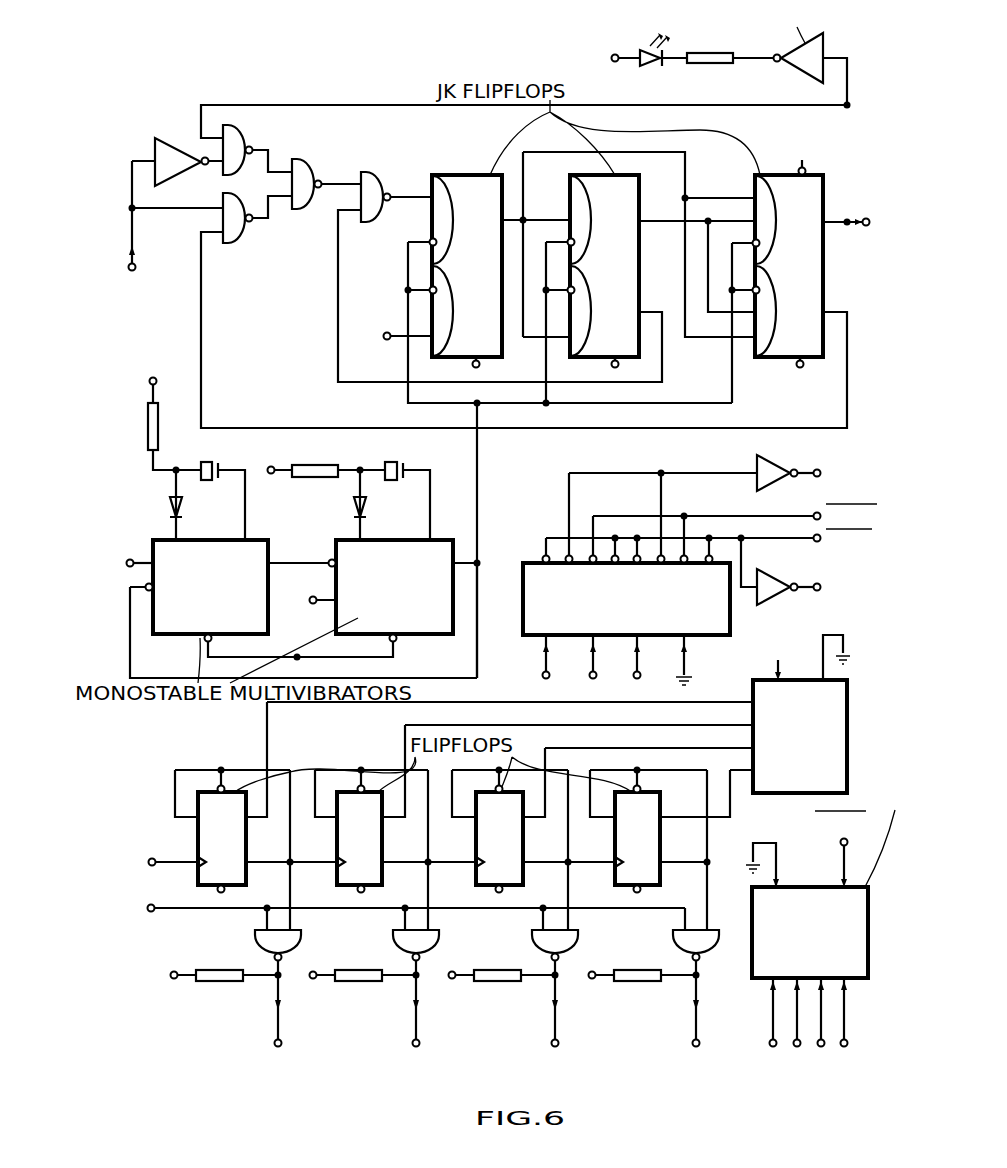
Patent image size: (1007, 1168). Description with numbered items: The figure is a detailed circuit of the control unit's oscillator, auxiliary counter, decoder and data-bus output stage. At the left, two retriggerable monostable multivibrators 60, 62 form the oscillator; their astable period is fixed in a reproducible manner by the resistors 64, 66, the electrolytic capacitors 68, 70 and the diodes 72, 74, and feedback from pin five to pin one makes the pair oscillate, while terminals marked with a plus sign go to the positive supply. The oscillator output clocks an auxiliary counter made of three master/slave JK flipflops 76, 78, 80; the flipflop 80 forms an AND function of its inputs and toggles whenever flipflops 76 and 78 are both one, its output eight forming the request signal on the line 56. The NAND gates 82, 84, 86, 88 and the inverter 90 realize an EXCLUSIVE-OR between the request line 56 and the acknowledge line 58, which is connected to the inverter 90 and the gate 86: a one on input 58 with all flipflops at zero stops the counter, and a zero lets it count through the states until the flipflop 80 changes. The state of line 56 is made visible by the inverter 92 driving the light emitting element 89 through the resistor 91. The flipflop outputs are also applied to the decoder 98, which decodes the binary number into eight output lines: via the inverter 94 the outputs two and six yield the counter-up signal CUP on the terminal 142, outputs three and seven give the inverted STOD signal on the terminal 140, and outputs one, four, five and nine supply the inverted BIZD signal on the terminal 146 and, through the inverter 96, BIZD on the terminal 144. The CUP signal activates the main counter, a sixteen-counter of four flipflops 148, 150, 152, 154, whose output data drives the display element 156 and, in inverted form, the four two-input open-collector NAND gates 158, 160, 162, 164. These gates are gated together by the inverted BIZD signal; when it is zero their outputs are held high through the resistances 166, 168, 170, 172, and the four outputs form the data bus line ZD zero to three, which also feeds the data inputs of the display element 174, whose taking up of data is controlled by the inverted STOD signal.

The request line 56 is at (858, 233).
The acknowledge line 58 is at (139, 267).
The retriggerable monostable multivibrator 60 is at (255, 588).
The retriggerable monostable multivibrator 62 is at (416, 625).
The resistor 64 is at (159, 426).
The resistor 66 is at (314, 462).
The electrolytic capacitor 68 is at (207, 462).
The electrolytic capacitor 70 is at (391, 462).
The diode 72 is at (181, 508).
The diode 74 is at (365, 508).
The JK flipflop 76 is at (466, 182).
The JK flipflop 78 is at (626, 272).
The JK flipflop 80 is at (816, 282).
The NAND gate 82 is at (370, 176).
The NAND gate 84 is at (304, 210).
The NAND gate 86 is at (240, 237).
The NAND gate 88 is at (237, 128).
The light emitting element 89 is at (654, 68).
The inverter 90 is at (176, 143).
The resistor 91 is at (703, 65).
The inverter 92 is at (803, 74).
The inverter 94 is at (756, 463).
The inverter 96 is at (756, 597).
The decoder 98 is at (720, 640).
The STOD terminal 140 is at (815, 513).
The CUP terminal 142 is at (817, 468).
The BIZD terminal 144 is at (813, 602).
The inverted BIZD terminal 146 is at (814, 541).
The flipflop 148 is at (198, 842).
The flipflop 150 is at (337, 842).
The flipflop 152 is at (476, 842).
The flipflop 154 is at (615, 842).
The display element 156 is at (838, 748).
The NAND gate 158 is at (300, 947).
The NAND gate 160 is at (438, 947).
The NAND gate 162 is at (577, 947).
The NAND gate 164 is at (711, 940).
The resistance 166 is at (215, 997).
The resistance 168 is at (357, 983).
The resistance 170 is at (496, 983).
The resistance 172 is at (636, 983).
The display element 174 is at (762, 926).